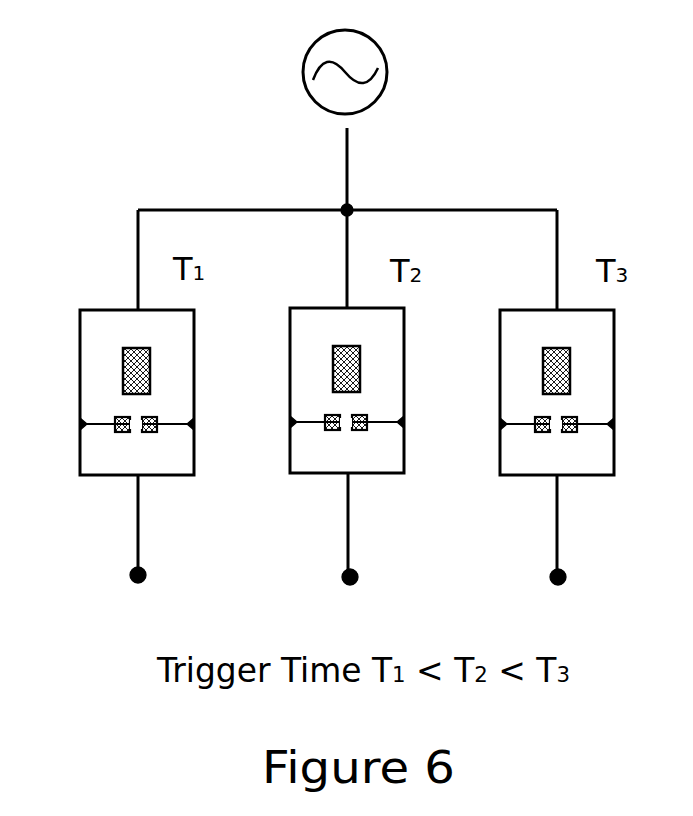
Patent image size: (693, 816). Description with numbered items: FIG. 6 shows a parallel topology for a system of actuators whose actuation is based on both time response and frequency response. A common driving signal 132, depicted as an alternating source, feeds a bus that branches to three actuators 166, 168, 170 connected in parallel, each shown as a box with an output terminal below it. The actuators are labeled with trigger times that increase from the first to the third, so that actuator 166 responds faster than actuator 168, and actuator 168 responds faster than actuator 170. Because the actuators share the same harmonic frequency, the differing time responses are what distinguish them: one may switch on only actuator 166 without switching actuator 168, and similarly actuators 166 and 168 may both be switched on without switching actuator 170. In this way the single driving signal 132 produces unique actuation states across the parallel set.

The driving signal 132 is at (385, 87).
The actuator 166 is at (142, 446).
The actuator 168 is at (350, 446).
The actuator 170 is at (561, 447).